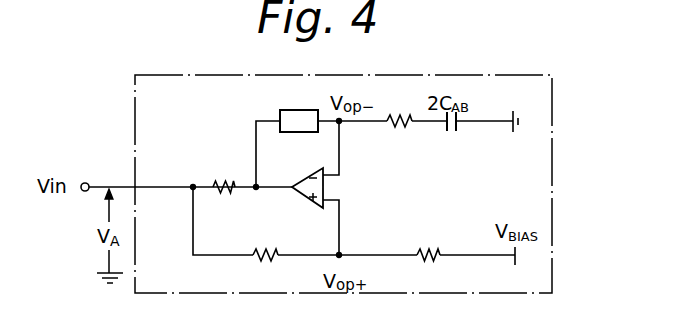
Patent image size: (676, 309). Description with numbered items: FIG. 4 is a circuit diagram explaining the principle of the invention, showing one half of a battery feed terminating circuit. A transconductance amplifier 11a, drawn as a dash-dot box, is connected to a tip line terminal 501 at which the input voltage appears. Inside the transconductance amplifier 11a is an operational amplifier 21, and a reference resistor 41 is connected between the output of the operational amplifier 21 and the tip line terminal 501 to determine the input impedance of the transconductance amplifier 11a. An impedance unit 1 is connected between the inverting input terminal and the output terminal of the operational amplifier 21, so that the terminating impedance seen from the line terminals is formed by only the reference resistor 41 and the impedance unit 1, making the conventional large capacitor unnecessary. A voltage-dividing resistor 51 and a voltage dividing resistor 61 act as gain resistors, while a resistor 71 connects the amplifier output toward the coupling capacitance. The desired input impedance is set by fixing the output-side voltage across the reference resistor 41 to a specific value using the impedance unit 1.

The impedance unit 1 is at (297, 110).
The transconductance amplifier 11a is at (443, 74).
The operational amplifier 21 is at (313, 207).
The reference resistor 41 is at (208, 183).
The voltage-dividing resistor 51 is at (259, 258).
The voltage dividing resistor 61 is at (429, 256).
The resistor 71 is at (400, 128).
The tip line terminal 501 is at (84, 192).